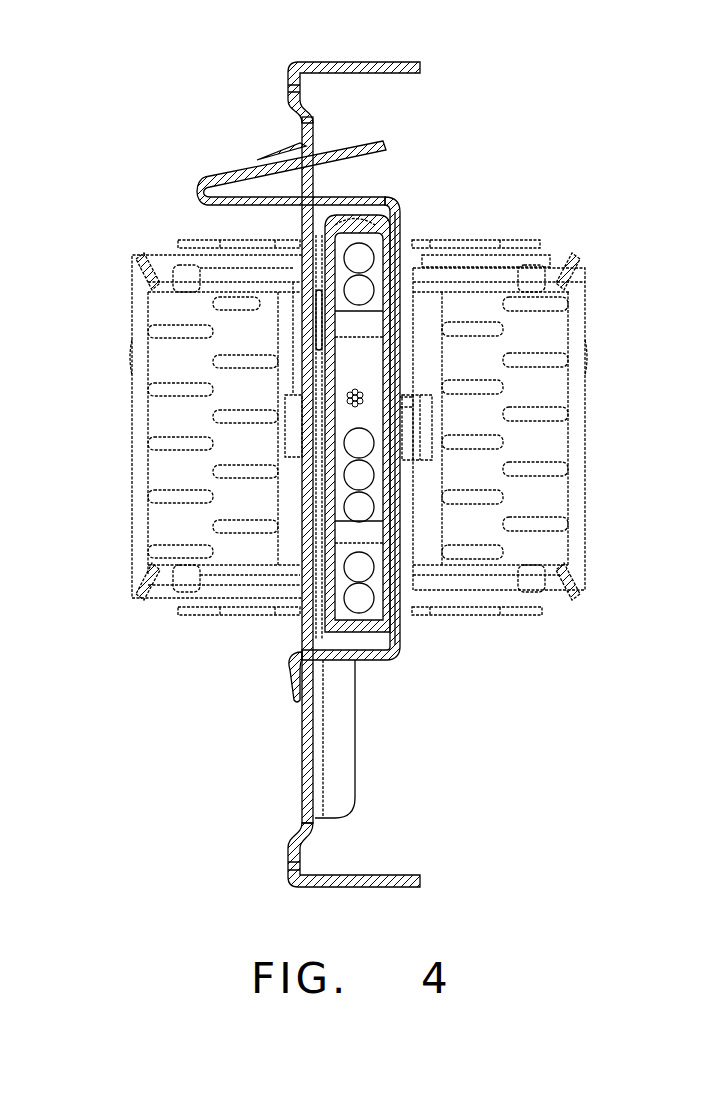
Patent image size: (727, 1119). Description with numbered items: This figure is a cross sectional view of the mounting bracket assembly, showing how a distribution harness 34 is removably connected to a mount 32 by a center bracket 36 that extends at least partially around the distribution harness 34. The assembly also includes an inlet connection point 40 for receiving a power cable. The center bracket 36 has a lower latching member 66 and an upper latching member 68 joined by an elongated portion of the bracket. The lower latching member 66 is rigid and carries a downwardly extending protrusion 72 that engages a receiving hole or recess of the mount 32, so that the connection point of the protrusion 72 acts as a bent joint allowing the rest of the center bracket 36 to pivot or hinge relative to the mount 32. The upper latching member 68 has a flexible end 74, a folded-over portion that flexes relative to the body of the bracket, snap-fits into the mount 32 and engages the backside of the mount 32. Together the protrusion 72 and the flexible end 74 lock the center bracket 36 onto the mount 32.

The mount 32 is at (352, 62).
The distribution harness 34 is at (375, 610).
The center bracket 36 is at (400, 205).
The inlet connection point 40 is at (128, 388).
The lower latching member 66 is at (237, 679).
The upper latching member 68 is at (195, 168).
The downwardly extending protrusion 72 is at (296, 690).
The flexible end 74 is at (283, 152).